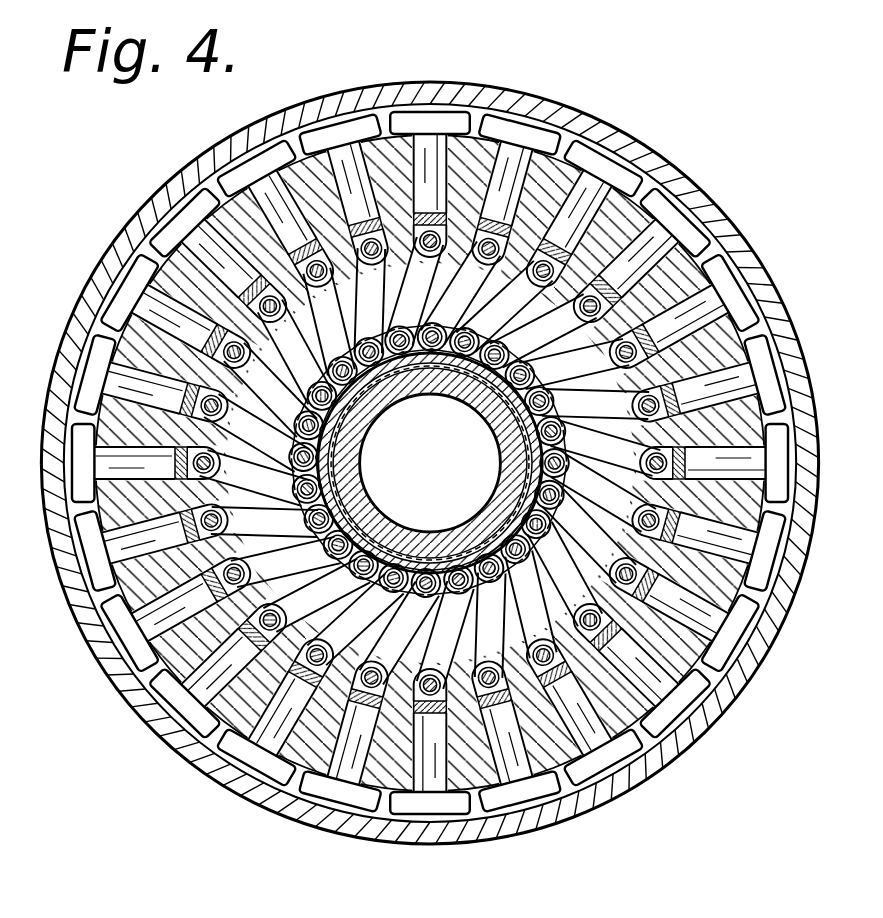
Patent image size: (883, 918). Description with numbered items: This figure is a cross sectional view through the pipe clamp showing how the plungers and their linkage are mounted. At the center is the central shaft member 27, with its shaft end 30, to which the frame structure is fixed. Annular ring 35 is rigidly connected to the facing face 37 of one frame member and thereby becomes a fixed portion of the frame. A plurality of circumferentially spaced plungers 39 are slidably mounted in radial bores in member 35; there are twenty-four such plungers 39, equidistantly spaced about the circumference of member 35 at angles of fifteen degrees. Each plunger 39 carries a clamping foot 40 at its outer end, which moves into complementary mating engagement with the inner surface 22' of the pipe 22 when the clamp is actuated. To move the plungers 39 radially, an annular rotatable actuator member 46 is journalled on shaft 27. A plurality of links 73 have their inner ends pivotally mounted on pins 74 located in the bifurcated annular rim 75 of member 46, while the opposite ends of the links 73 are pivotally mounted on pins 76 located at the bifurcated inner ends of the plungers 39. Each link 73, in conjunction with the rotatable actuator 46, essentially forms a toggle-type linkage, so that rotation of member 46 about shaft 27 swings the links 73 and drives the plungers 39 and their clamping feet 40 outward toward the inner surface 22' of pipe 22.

The pipe 22 is at (429, 463).
The inner surface of pipe 22' is at (430, 463).
The annular ring 35 is at (712, 342).
The facing face of frame member 29 37 is at (748, 421).
The plunger 39 is at (300, 160).
The clamping foot 40 is at (677, 218).
The link 73 is at (440, 298).
The pin 76 is at (165, 265).
The central shaft member 27 is at (378, 398).
The shaft end 30 is at (488, 453).
The pin 74 is at (308, 432).
The bifurcated annular rim 75 is at (318, 467).
The annular rotatable actuator member 46 is at (337, 503).